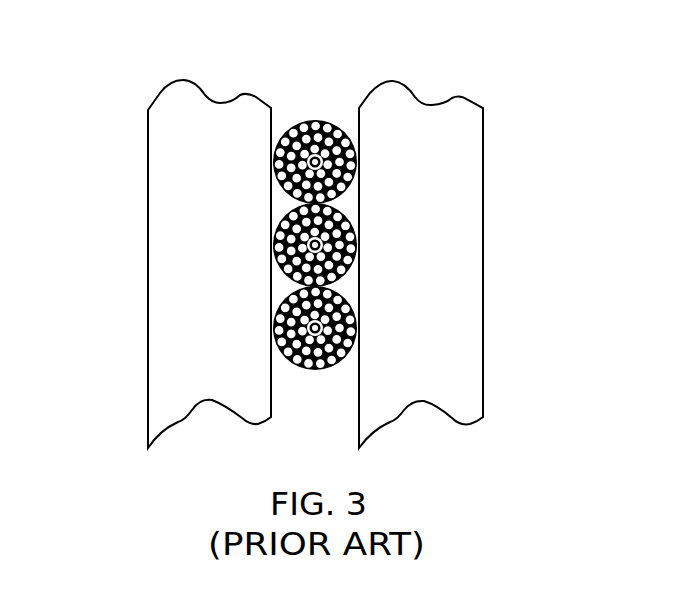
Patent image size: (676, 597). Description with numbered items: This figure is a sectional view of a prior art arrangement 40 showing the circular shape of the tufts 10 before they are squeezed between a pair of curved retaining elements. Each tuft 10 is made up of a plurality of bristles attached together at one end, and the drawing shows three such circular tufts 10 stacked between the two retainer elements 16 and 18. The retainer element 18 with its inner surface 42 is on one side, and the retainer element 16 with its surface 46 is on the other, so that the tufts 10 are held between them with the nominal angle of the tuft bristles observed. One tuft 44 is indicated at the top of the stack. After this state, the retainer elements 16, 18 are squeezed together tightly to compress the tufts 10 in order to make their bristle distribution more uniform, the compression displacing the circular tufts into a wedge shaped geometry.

The tuft 10 is at (336, 243).
The retainer element 16 is at (463, 99).
The retainer element 18 is at (165, 88).
The prior art fiber array assembly 40 is at (345, 66).
The first plate inner surface 42 is at (148, 160).
The fiber bundle 44 is at (302, 120).
The second plate outer surface 46 is at (483, 268).